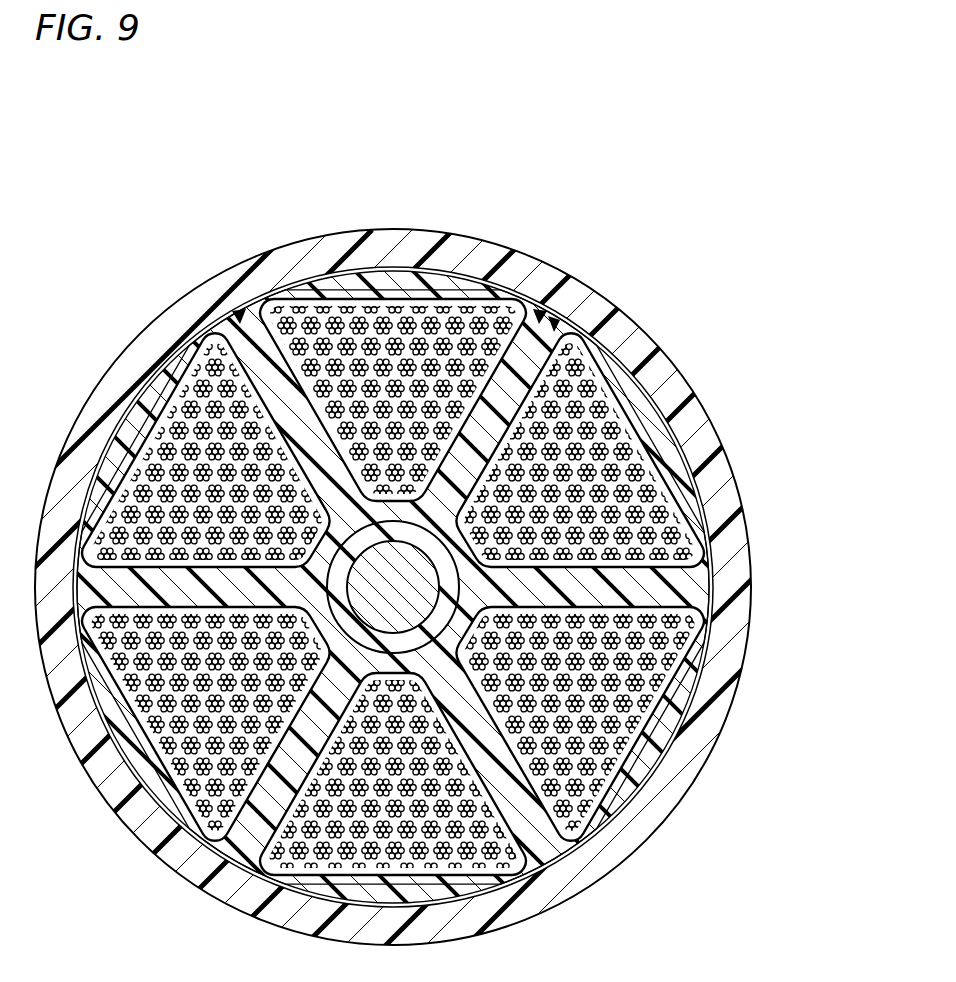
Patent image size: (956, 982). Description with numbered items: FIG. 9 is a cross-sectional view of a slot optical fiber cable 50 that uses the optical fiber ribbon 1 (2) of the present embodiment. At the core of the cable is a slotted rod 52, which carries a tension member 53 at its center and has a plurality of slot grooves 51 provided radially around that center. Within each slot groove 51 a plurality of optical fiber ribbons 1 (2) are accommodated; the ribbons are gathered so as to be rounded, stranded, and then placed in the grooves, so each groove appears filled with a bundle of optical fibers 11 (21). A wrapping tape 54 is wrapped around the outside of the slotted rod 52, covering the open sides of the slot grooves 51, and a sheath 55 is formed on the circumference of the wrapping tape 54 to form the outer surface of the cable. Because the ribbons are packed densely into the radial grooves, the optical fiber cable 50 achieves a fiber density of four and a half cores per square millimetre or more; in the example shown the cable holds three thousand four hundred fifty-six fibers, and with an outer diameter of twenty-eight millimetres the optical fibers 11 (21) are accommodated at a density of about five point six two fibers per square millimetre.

The slot optical fiber cable 50 is at (513, 153).
The sheath 55 is at (660, 805).
The wrapping tape 54 is at (640, 733).
The slot grooves 51 is at (598, 333).
The slotted rod 52 is at (535, 299).
The optical fiber ribbon 1 is at (449, 587).
The optical fiber ribbon 2 is at (637, 433).
The optical fibers 11 is at (449, 587).
The optical fibers 21 is at (673, 490).
The tension member 53 is at (425, 595).